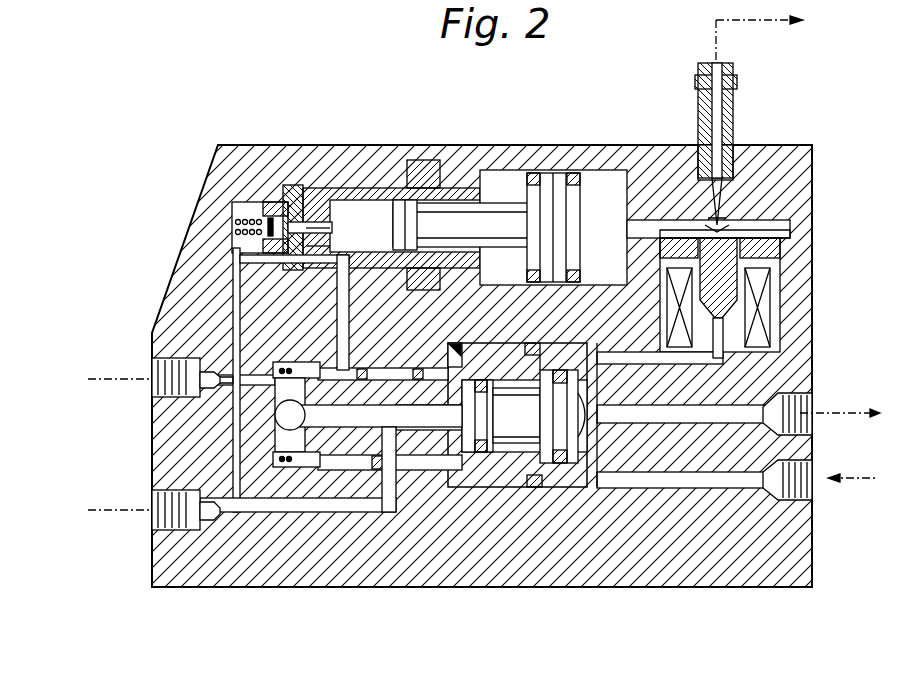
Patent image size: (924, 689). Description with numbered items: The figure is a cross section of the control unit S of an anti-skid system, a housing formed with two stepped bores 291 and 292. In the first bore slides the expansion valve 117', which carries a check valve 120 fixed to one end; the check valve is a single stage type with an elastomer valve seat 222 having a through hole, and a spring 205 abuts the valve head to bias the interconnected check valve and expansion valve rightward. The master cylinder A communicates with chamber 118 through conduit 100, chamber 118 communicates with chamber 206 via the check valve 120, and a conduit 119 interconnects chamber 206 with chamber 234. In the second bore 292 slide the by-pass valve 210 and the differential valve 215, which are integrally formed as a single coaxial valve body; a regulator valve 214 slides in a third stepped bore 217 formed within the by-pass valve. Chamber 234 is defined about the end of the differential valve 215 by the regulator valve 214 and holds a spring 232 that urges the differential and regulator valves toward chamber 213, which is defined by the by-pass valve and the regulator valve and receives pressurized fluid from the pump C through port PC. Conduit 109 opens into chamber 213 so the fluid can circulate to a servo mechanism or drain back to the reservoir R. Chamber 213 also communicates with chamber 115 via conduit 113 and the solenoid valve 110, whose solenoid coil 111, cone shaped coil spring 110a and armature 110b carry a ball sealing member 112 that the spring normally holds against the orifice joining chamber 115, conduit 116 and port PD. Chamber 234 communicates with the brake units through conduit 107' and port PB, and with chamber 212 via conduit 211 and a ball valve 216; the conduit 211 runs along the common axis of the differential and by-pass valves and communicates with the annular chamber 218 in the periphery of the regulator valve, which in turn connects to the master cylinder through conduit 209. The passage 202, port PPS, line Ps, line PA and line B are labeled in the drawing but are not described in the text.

The conduit 100 is at (235, 283).
The check valve 120 is at (255, 200).
The spring 205 is at (245, 210).
The chamber 118 is at (240, 242).
The chamber 206 is at (293, 185).
The expansion valve 117' is at (384, 158).
The valve seat 222 is at (337, 238).
The conduit 119 is at (324, 259).
The chamber 115 is at (608, 192).
The first stepped bore 291 is at (500, 185).
The solenoid valve 110 is at (780, 280).
The cone shaped coil spring 110a is at (790, 234).
The armature 110b is at (745, 246).
The solenoid coil 111 is at (768, 300).
The conduit 113 is at (603, 393).
The sealing member 112 is at (720, 222).
The conduit 116 is at (735, 170).
The port PD is at (737, 84).
The reservoir R is at (769, 21).
The passage 202 is at (593, 413).
The supply pressure port PPS is at (805, 412).
The supply pressure Ps is at (856, 414).
The chamber 213 is at (597, 450).
The port PC is at (810, 492).
The pump C is at (866, 477).
The conduit 109 is at (683, 412).
The by-pass valve 210 is at (540, 468).
The second stepped bore 292 is at (485, 350).
The third stepped bore 217 is at (533, 368).
The annular chamber 218 is at (436, 450).
The conduit 211 is at (472, 462).
The regulator valve 214 is at (520, 472).
The chamber 212 is at (500, 480).
The differential valve 215 is at (325, 450).
The ball valve 216 is at (276, 418).
The conduit 107' is at (172, 403).
The spring 232 is at (262, 327).
The chamber 234 is at (350, 312).
The conduit 209 is at (350, 512).
The port PB is at (152, 368).
The line B is at (105, 380).
The port A PA is at (153, 518).
The master cylinder A is at (105, 514).
The control unit S is at (212, 74).